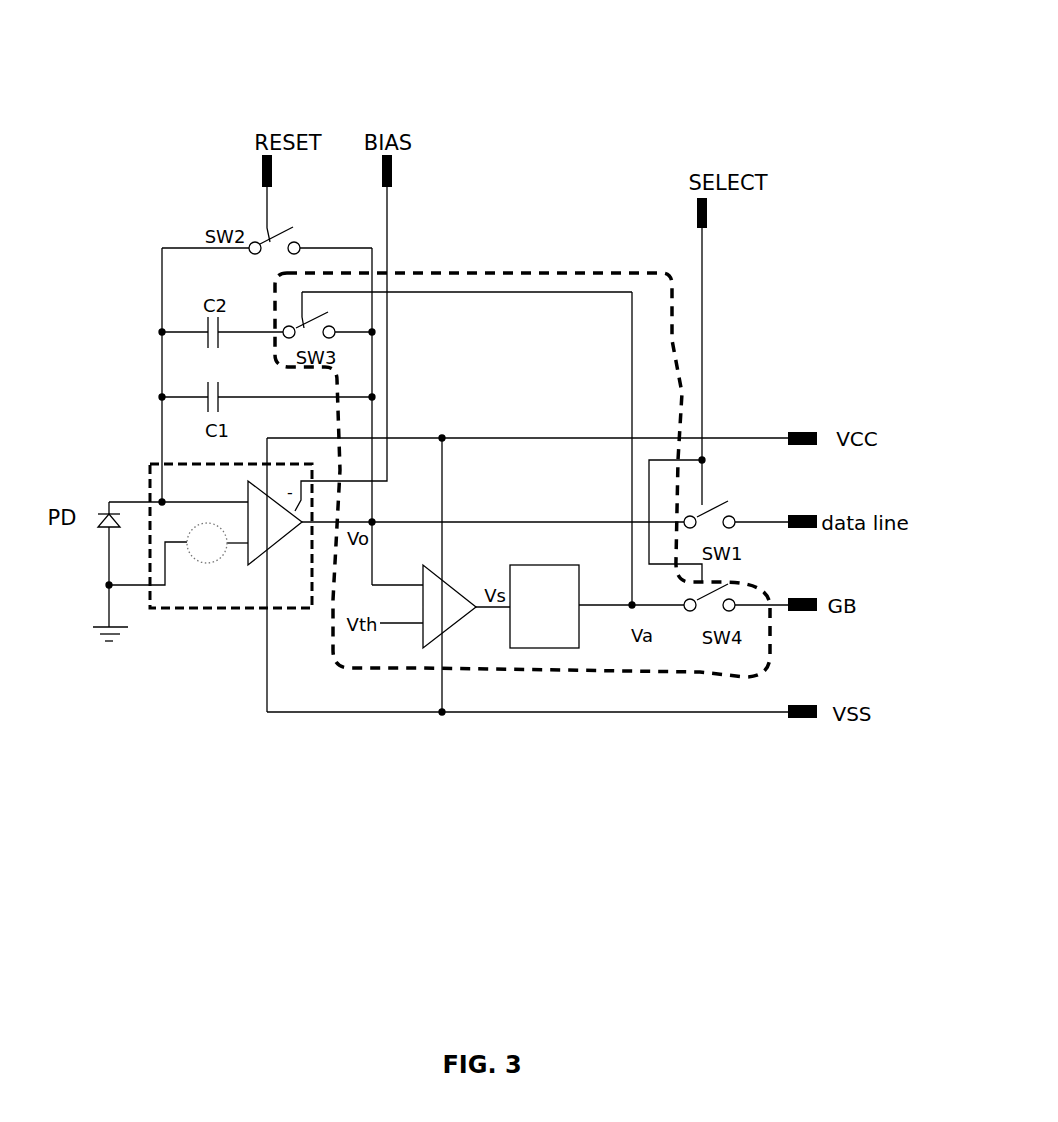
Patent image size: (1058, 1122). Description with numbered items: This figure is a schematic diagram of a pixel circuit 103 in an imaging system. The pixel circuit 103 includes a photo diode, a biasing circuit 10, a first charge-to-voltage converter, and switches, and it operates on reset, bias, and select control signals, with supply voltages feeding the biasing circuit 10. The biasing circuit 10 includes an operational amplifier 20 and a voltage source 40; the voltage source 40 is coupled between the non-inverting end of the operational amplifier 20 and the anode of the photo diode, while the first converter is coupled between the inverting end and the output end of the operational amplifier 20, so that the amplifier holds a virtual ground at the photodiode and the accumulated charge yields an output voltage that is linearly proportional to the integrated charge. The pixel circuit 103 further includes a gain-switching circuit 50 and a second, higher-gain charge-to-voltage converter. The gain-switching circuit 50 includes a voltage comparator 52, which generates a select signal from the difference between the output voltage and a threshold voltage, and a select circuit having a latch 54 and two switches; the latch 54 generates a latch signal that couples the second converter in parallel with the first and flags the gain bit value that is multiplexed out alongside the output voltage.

The pixel circuit 103 is at (652, 41).
The biasing circuit 10 is at (178, 608).
The operational amplifier 20 is at (264, 531).
The voltage source 40 is at (223, 552).
The gain-switching circuit 50 is at (508, 270).
The voltage comparator 52 is at (434, 617).
The latch 54 is at (537, 618).